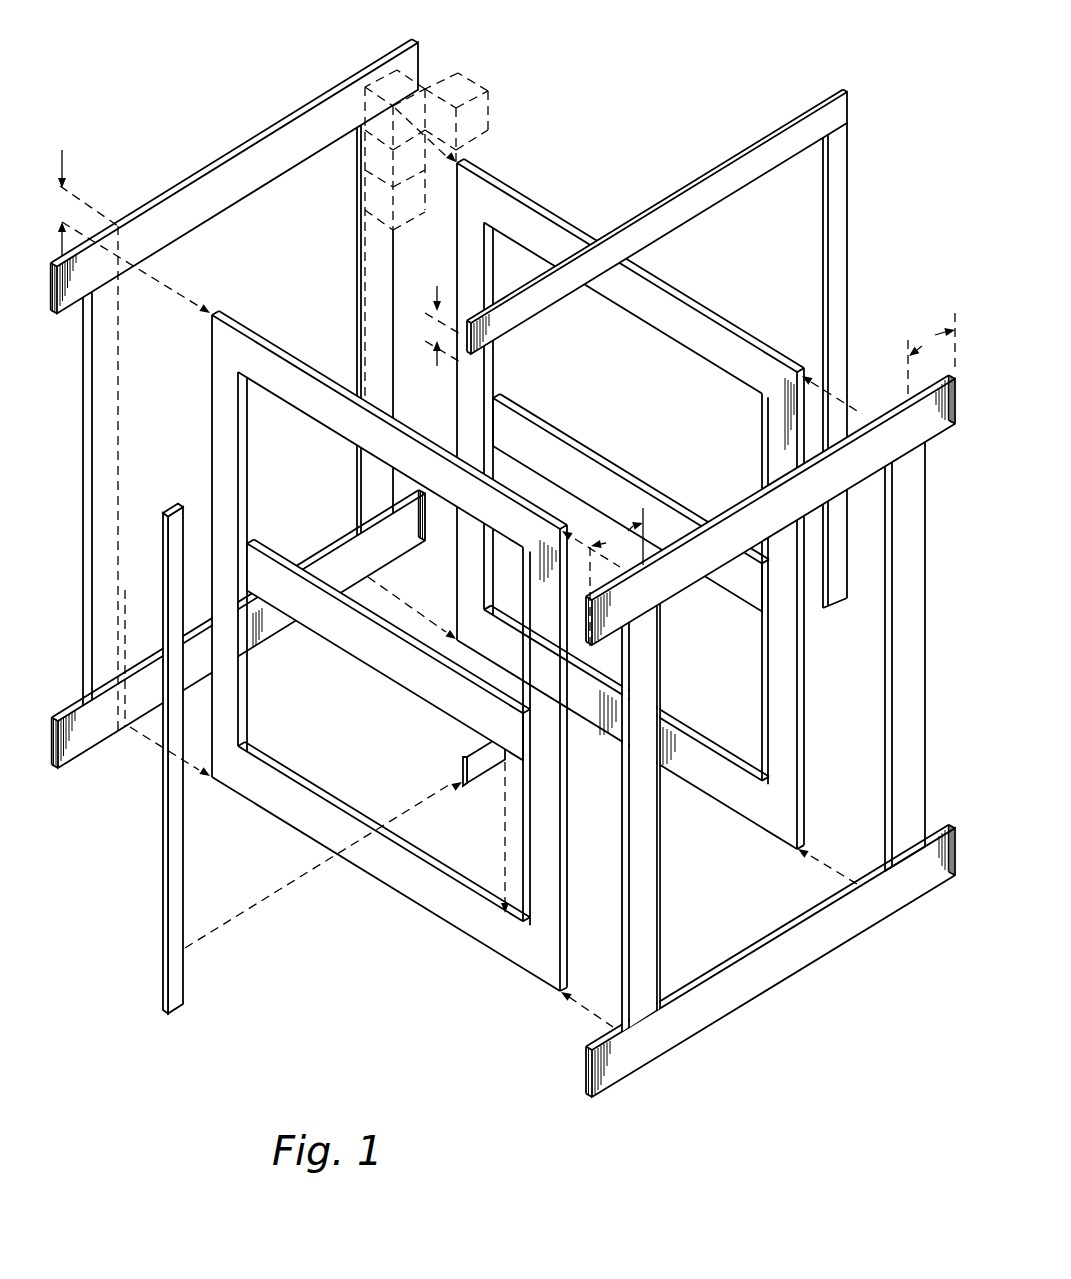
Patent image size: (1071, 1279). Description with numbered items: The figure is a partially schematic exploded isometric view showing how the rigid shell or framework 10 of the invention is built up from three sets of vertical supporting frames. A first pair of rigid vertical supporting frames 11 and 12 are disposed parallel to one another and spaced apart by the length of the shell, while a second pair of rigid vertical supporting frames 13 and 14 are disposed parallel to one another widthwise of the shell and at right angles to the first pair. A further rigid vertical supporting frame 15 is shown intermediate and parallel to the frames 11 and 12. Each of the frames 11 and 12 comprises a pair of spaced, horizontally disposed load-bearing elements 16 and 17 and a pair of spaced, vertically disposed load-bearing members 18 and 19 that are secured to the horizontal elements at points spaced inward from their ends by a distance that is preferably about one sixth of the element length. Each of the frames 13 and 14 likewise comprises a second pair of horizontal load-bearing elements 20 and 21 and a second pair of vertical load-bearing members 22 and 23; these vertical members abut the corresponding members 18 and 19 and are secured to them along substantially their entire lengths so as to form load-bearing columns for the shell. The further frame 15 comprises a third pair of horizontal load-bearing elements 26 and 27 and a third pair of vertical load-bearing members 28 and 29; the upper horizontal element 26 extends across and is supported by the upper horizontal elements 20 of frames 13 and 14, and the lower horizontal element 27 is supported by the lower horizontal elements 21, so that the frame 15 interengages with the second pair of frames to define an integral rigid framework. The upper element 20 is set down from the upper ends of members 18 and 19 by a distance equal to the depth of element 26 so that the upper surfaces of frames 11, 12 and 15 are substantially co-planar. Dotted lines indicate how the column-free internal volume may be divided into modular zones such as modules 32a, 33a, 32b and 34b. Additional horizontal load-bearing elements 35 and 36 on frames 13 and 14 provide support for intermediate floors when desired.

The rigid shell or framework 10 is at (509, 568).
The vertical supporting frame 11 is at (927, 569).
The vertical supporting frame 12 is at (82, 363).
The vertical supporting frame 13 is at (218, 405).
The vertical supporting frame 14 is at (518, 190).
The further supporting frame 15 is at (852, 148).
The horizontal load-bearing element 16 is at (186, 196).
The horizontal load-bearing element 17 is at (335, 570).
The vertical load-bearing member 18 is at (97, 558).
The vertical load-bearing member 19 is at (383, 257).
The horizontal load-bearing element 20 is at (740, 330).
The horizontal load-bearing element 21 is at (745, 797).
The vertical load-bearing member 22 is at (471, 377).
The vertical load-bearing member 23 is at (778, 447).
The horizontal load-bearing element 26 is at (700, 198).
The horizontal load-bearing element 27 is at (473, 777).
The vertical load-bearing member 28 is at (173, 852).
The vertical load-bearing member 29 is at (847, 243).
The module 32a is at (437, 89).
The module 32b is at (363, 136).
The module 33a is at (487, 110).
The module 34b is at (363, 210).
The additional horizontal load-bearing element 35 is at (405, 672).
The additional horizontal load-bearing element 36 is at (610, 480).